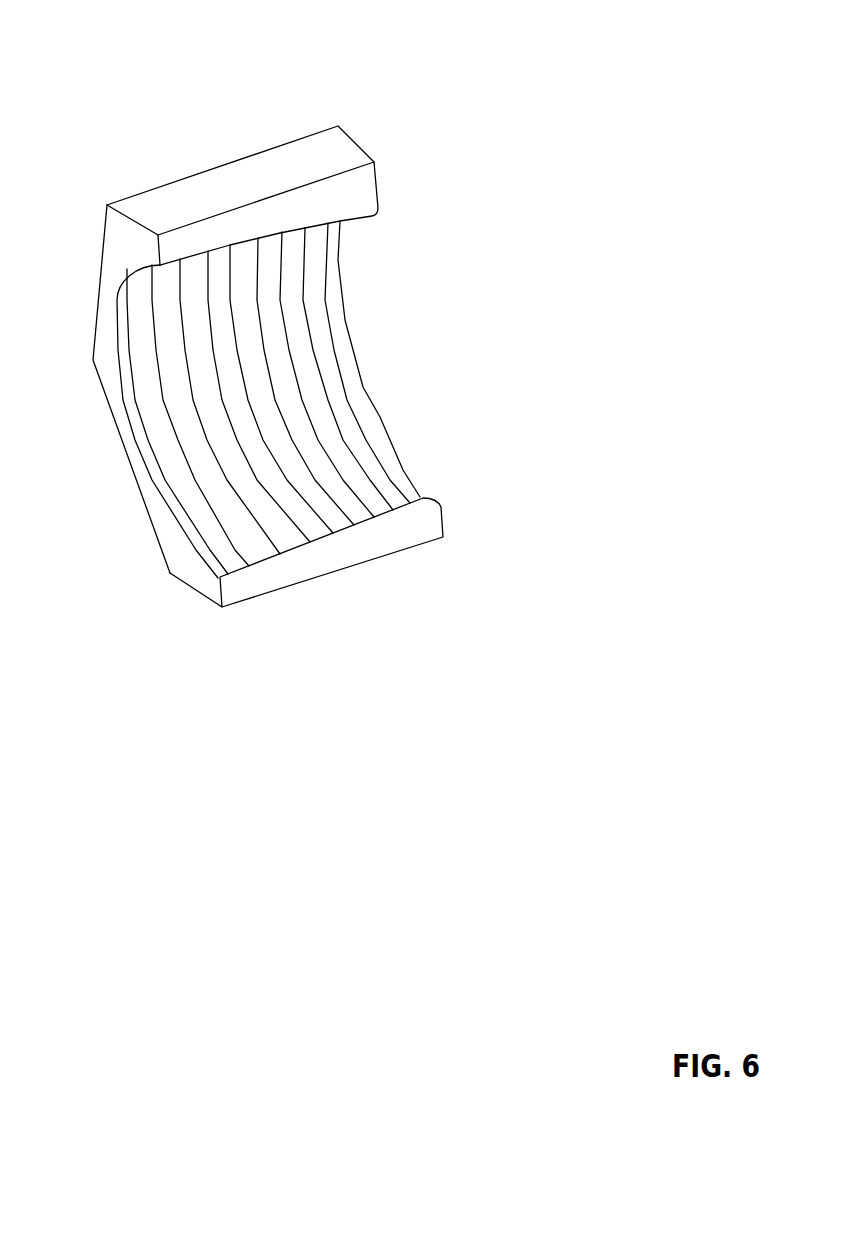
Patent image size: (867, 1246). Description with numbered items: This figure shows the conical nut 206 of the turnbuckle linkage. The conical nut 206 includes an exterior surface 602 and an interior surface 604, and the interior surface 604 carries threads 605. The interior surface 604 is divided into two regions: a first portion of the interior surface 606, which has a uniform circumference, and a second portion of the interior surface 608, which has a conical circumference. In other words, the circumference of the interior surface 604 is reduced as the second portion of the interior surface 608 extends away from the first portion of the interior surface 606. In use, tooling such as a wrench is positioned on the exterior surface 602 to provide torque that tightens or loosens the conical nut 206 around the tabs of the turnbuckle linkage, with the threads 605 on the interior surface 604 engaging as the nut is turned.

The conical nut 206 is at (256, 51).
The exterior surface 602 is at (313, 153).
The interior surface 604 is at (122, 410).
The threads 605 is at (387, 467).
The first portion of the interior surface 606 is at (163, 493).
The second portion of the interior surface 608 is at (340, 410).